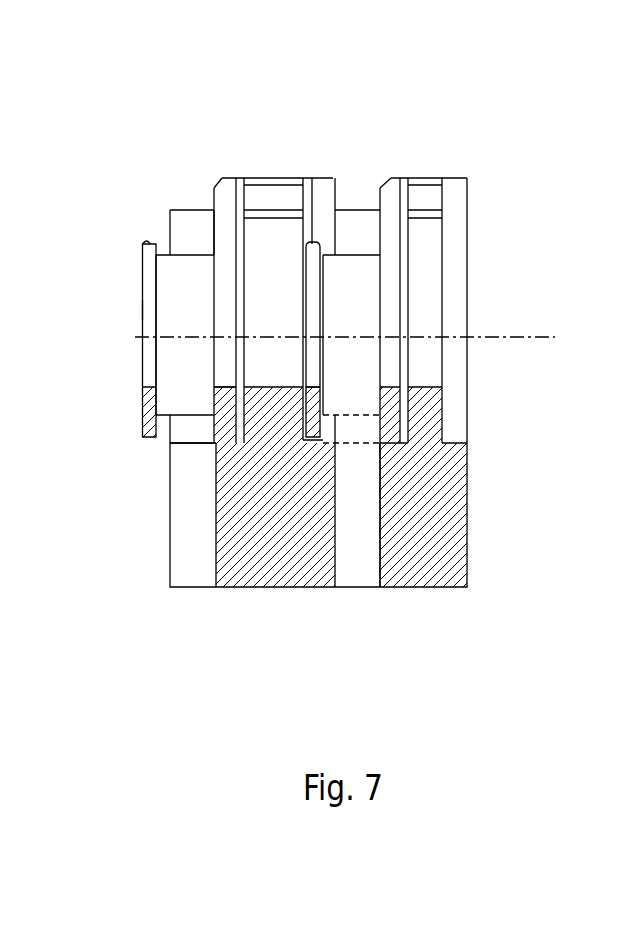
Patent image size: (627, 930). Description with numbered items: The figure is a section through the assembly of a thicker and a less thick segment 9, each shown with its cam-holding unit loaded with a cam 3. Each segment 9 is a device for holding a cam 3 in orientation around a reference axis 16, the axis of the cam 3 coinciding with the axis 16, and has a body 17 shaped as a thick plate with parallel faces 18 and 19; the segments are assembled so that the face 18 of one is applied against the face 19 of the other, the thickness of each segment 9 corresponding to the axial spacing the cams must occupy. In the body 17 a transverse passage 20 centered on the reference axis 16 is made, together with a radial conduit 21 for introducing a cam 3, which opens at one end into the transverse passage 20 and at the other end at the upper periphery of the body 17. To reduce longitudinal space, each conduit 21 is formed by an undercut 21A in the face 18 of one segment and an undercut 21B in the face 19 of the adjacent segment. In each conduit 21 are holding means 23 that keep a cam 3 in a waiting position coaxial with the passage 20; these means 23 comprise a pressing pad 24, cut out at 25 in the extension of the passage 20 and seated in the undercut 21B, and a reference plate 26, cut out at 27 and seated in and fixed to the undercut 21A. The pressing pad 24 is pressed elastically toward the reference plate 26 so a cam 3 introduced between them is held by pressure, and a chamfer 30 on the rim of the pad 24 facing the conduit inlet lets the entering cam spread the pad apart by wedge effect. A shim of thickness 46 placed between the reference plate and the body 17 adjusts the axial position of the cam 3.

The cam 3 is at (183, 288).
The segment 9 is at (290, 160).
The reference axis 16 is at (493, 336).
The body 17 is at (272, 568).
The face 18 is at (333, 557).
The face 19 is at (468, 518).
The transverse passage 20 is at (273, 365).
The radial conduit 21 is at (183, 196).
The undercut 21A is at (355, 428).
The undercut 21B is at (320, 235).
The holding means 23 is at (128, 307).
The pressing pad 24 is at (152, 410).
The cutout 25 is at (320, 381).
The reference plate 26 is at (213, 443).
The cutout 27 is at (225, 364).
The chamfer 30 is at (143, 236).
The shim 46 is at (250, 200).